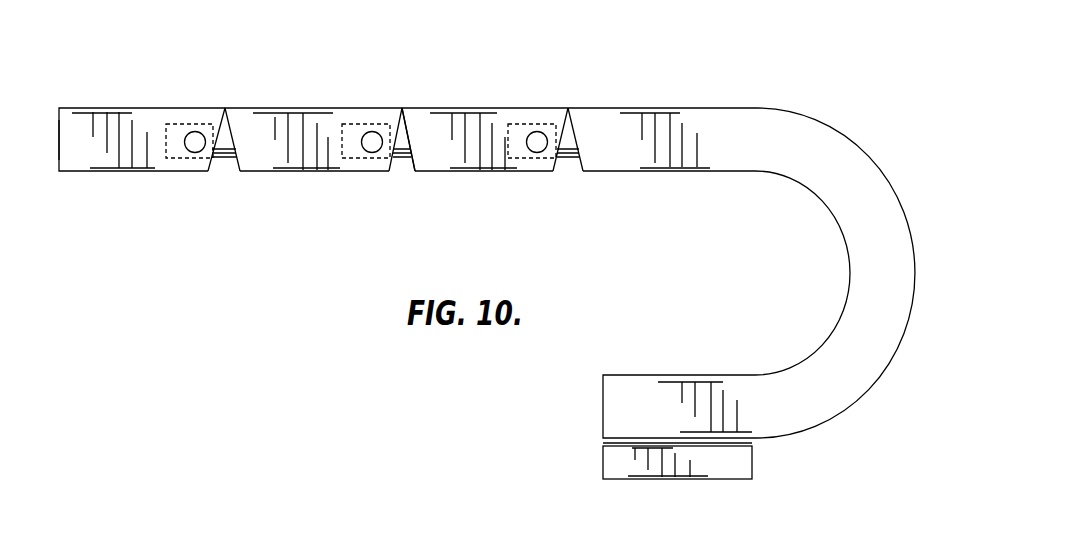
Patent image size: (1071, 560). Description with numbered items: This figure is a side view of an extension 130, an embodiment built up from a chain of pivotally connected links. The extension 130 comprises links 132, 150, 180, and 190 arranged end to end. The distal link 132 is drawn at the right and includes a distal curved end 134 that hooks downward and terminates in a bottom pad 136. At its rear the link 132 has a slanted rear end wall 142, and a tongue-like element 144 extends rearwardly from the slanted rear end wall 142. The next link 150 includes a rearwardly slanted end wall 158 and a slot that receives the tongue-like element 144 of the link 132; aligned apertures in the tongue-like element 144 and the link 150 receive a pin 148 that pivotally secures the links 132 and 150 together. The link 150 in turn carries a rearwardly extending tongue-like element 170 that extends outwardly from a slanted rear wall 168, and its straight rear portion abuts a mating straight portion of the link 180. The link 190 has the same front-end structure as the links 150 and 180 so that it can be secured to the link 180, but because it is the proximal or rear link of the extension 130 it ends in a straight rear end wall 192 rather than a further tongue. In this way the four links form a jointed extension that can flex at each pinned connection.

The extension 130 is at (474, 271).
The link 132 is at (660, 108).
The distal curved end 134 is at (883, 182).
The bottom pad 136 is at (678, 480).
The slanted rear end wall 142 is at (578, 167).
The tongue-like element 144 is at (570, 158).
The pin 148 is at (533, 151).
The link 150 is at (485, 108).
The rearwardly slanted end wall 158 is at (553, 169).
The slanted rear wall 168 is at (413, 168).
The tongue-like element 170 is at (395, 155).
The link 180 is at (307, 108).
The link 190 is at (133, 108).
The straight rear end wall 192 is at (58, 130).